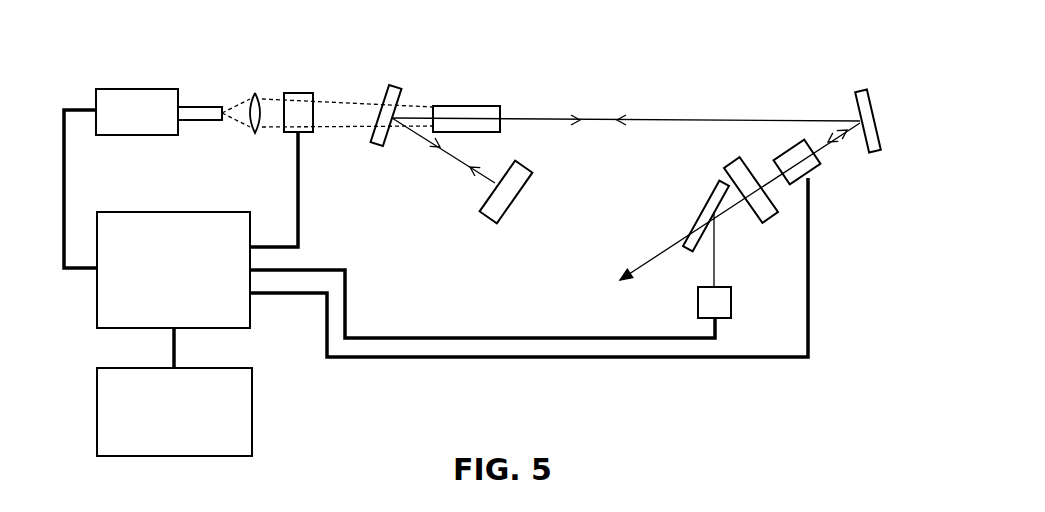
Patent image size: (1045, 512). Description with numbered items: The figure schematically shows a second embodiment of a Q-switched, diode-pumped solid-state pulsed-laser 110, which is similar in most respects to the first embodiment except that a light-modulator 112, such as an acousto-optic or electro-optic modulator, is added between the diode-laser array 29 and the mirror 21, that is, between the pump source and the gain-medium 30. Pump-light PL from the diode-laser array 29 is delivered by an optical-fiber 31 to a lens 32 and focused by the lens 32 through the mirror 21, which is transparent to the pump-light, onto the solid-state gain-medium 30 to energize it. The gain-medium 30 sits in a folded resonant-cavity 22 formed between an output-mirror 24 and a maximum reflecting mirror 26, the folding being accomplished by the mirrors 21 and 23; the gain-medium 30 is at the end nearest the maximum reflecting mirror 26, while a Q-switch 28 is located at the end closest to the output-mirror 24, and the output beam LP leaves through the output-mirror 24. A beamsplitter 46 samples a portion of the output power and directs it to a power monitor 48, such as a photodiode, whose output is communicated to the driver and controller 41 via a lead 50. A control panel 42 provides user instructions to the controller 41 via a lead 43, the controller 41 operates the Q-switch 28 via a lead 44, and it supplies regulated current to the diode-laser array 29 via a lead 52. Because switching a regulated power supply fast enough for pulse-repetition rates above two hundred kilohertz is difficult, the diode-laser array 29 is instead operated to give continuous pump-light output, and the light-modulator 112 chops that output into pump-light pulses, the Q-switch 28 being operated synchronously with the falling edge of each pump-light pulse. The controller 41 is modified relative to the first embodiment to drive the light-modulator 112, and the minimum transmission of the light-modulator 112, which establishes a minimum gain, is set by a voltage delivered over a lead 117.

The diode-laser array 29 is at (153, 125).
The optical-fiber 31 is at (208, 106).
The lens 32 is at (257, 95).
The light-modulator 112 is at (302, 93).
The pump-light PL is at (343, 100).
The mirror 21 is at (396, 86).
The solid-state gain-medium 30 is at (467, 107).
The resonant-cavity 22 is at (451, 190).
The maximum reflecting mirror 26 is at (518, 198).
The mirror 23 is at (858, 92).
The Q-switch 28 is at (790, 148).
The output-mirror 24 is at (771, 216).
The beamsplitter 46 is at (715, 193).
The output laser pulse LP is at (662, 250).
The power monitor 48 is at (731, 302).
The driver and controller 41 is at (159, 320).
The control panel 42 is at (159, 450).
The lead 52 is at (65, 155).
The lead 117 is at (302, 214).
The lead 43 is at (177, 344).
The lead 50 is at (480, 336).
The lead 44 is at (707, 360).
The pulsed-laser 110 is at (410, 372).